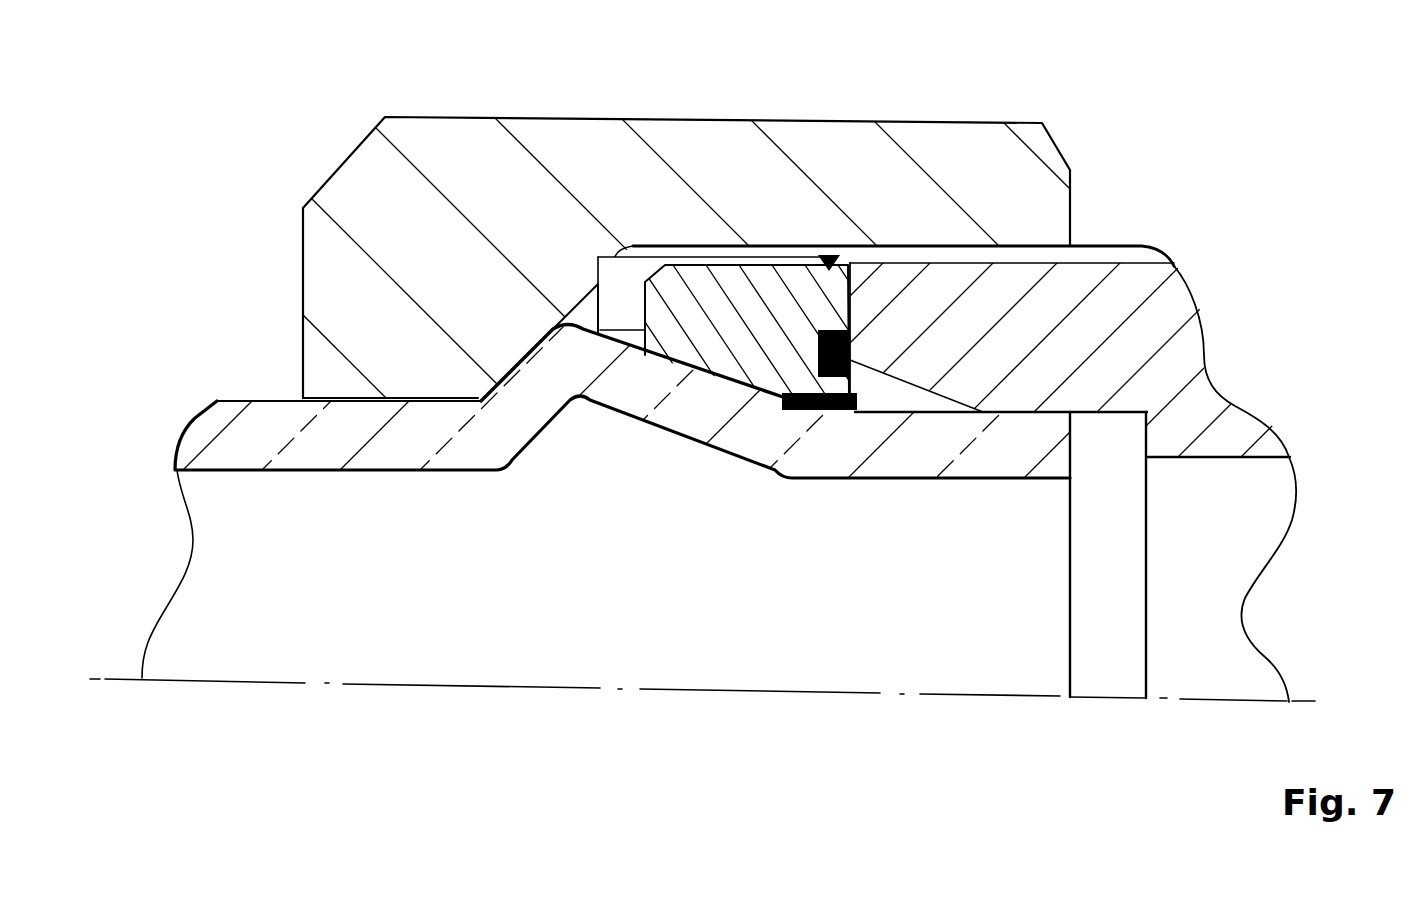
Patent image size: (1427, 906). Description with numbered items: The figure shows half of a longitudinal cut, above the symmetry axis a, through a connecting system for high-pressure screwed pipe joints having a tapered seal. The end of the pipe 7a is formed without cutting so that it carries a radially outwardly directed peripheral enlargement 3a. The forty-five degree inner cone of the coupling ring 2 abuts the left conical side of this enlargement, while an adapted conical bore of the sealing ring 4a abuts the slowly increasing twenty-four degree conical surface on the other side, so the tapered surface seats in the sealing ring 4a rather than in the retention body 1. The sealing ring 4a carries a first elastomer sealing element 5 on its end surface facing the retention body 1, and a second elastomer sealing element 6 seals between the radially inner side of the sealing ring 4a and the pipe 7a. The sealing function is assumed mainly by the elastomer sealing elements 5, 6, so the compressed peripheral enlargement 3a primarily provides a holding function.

The retention body 1 is at (1133, 288).
The coupling ring 2 is at (397, 163).
The peripheral enlargement 3a is at (563, 343).
The sealing ring 4a is at (695, 297).
The first elastomer sealing element 5 is at (833, 328).
The second elastomer sealing element 6 is at (810, 412).
The pipe 7a is at (205, 435).
The symmetry axis a is at (110, 678).